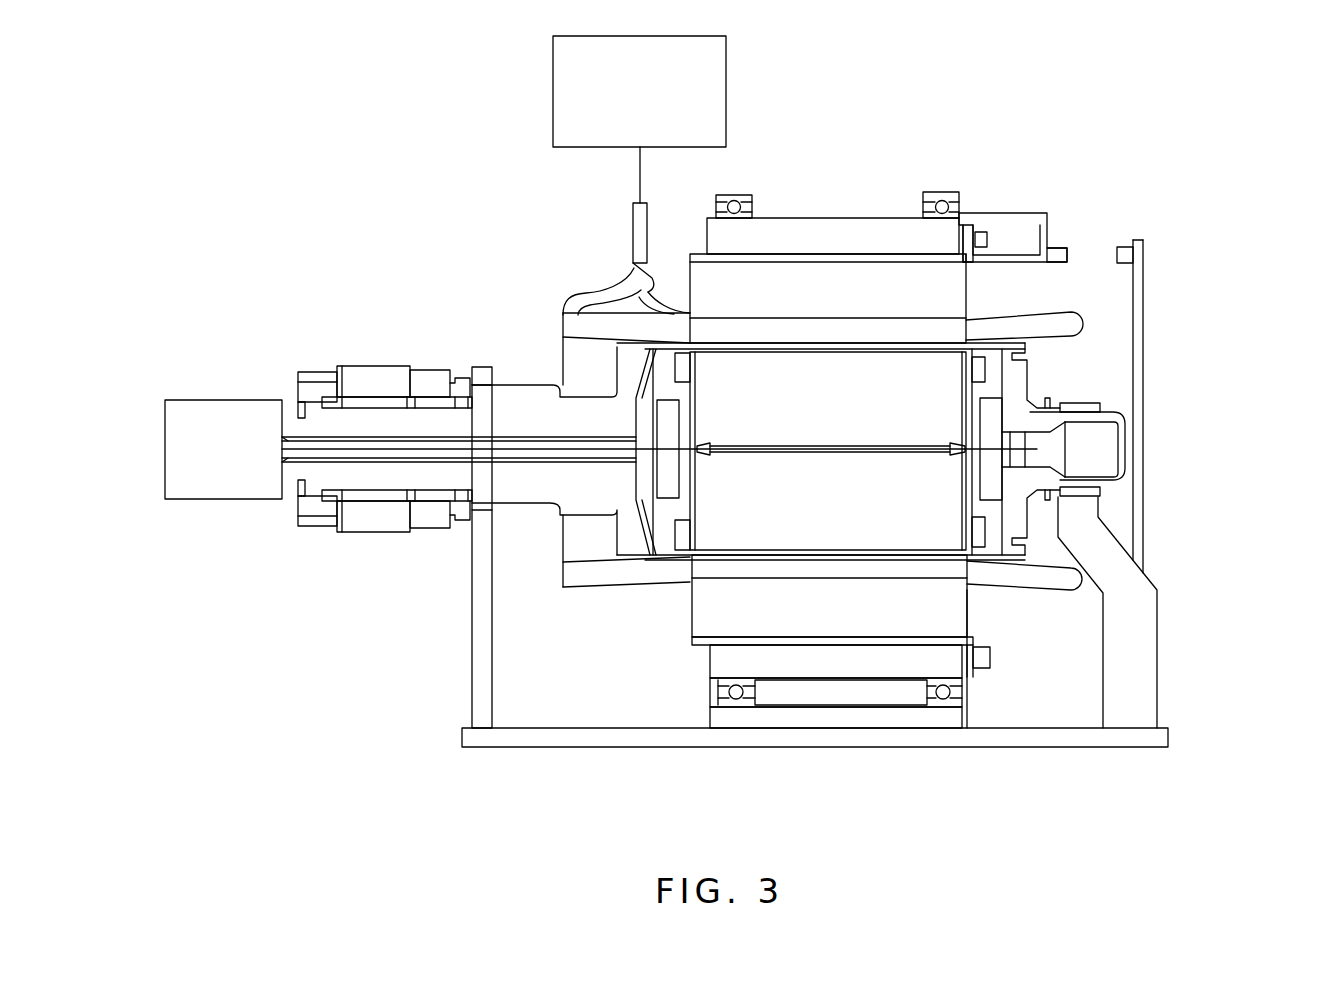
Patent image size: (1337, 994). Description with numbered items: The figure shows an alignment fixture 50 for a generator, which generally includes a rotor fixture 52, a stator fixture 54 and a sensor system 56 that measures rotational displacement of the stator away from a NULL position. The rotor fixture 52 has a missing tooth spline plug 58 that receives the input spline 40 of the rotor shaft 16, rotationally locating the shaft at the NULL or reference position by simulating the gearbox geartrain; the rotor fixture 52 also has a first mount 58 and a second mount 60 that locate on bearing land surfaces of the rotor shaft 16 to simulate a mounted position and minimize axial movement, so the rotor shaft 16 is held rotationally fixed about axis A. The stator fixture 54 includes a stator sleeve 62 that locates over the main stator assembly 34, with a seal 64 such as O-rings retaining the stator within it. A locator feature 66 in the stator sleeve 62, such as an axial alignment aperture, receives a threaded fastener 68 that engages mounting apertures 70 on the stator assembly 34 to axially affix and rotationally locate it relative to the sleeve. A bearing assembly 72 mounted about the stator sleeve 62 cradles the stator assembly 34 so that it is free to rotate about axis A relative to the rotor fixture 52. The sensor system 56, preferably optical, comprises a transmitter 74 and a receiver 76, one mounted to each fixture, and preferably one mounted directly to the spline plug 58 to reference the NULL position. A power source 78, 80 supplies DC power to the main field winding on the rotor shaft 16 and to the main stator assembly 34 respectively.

The rotor shaft 16 is at (814, 415).
The main stator assembly 34 is at (810, 301).
The input spline 40 is at (1122, 410).
The alignment fixture 50 is at (1216, 197).
The rotor fixture 52 is at (1192, 699).
The stator fixture 54 is at (1044, 714).
The sensor system 56 is at (1172, 259).
The missing tooth spline plug 58 is at (492, 638).
The second mount 60 is at (1103, 643).
The stator sleeve 62 is at (987, 263).
The seal 64 is at (722, 265).
The locator feature 66 is at (983, 232).
The threaded fastener 68 is at (988, 246).
The mounting apertures 70 is at (963, 265).
The bearing assembly 72 is at (708, 688).
The transmitter 74 is at (1123, 247).
The receiver 76 is at (1058, 248).
The power source 78 is at (205, 462).
The power source 80 is at (623, 104).
The axis A is at (830, 450).